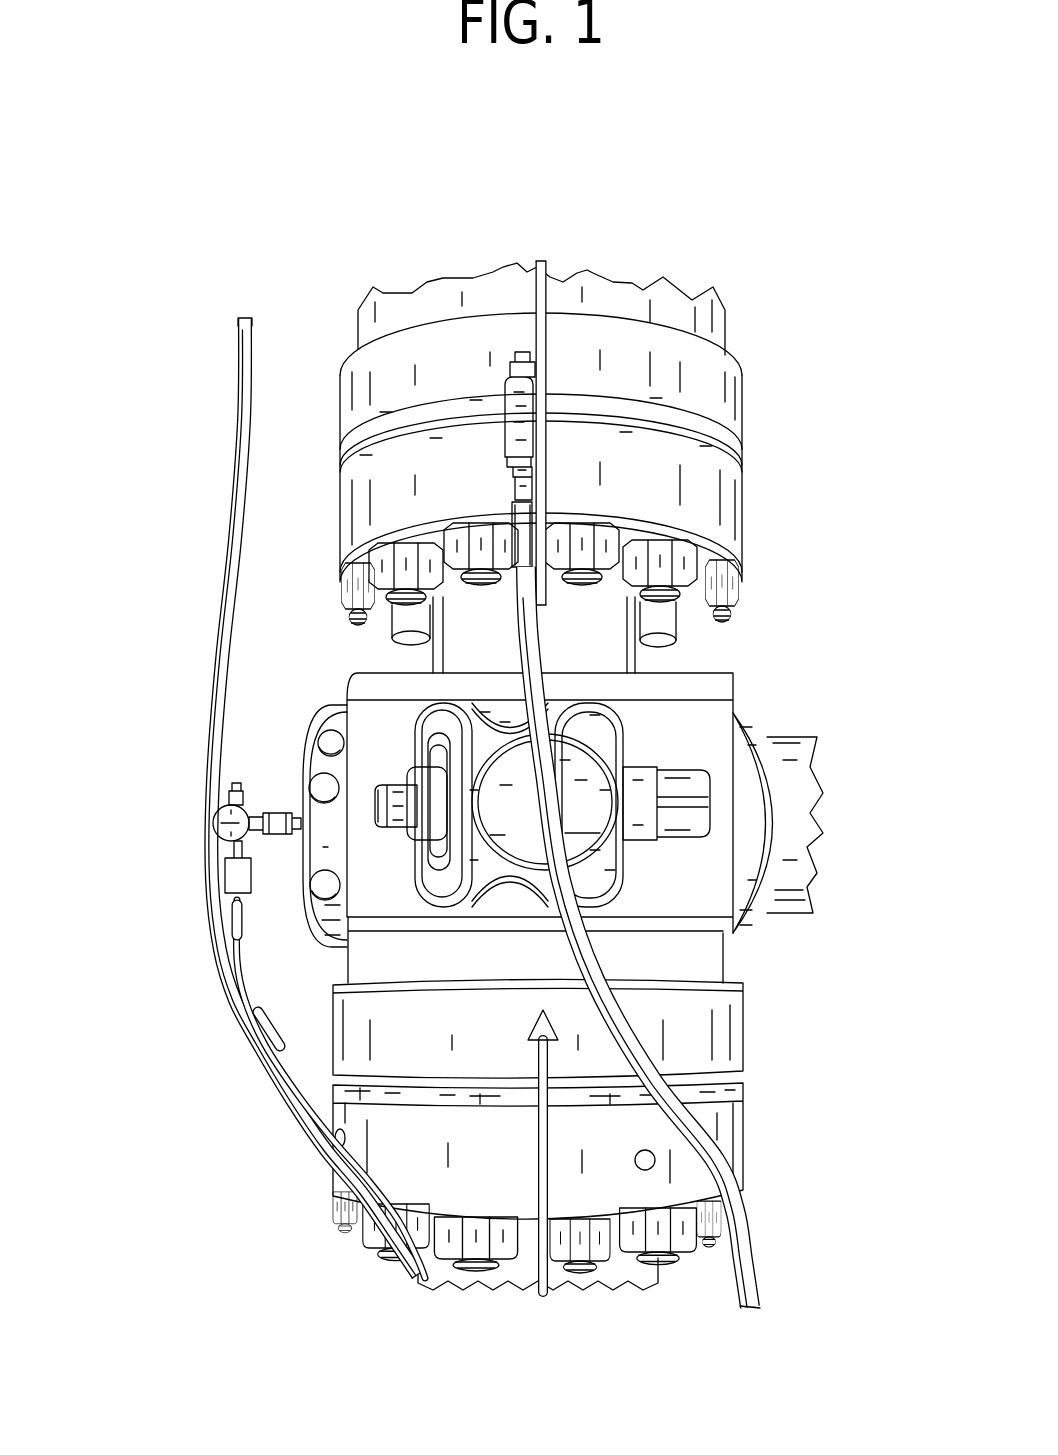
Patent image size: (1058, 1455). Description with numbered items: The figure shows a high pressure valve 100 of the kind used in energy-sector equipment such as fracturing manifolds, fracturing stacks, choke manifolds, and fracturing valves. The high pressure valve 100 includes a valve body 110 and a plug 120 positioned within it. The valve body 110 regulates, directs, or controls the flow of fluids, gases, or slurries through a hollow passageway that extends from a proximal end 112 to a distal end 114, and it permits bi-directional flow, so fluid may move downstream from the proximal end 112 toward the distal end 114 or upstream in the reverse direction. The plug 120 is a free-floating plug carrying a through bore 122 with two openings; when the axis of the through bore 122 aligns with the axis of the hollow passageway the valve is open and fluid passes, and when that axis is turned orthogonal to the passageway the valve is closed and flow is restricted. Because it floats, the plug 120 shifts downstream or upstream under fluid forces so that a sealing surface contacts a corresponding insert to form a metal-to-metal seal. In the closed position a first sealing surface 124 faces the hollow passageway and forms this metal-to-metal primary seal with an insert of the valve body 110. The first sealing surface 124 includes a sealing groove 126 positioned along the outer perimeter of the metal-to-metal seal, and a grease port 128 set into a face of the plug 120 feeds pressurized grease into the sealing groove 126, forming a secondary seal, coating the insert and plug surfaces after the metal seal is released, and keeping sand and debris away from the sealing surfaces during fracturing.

The high pressure valve 100 is at (172, 212).
The valve body 110 is at (447, 455).
The proximal end 112 is at (423, 1188).
The distal end 114 is at (638, 317).
The plug 120 is at (603, 743).
The through bore 122 is at (540, 703).
The first sealing surface 124 is at (515, 833).
The sealing groove 126 is at (617, 807).
The grease port 128 is at (393, 804).